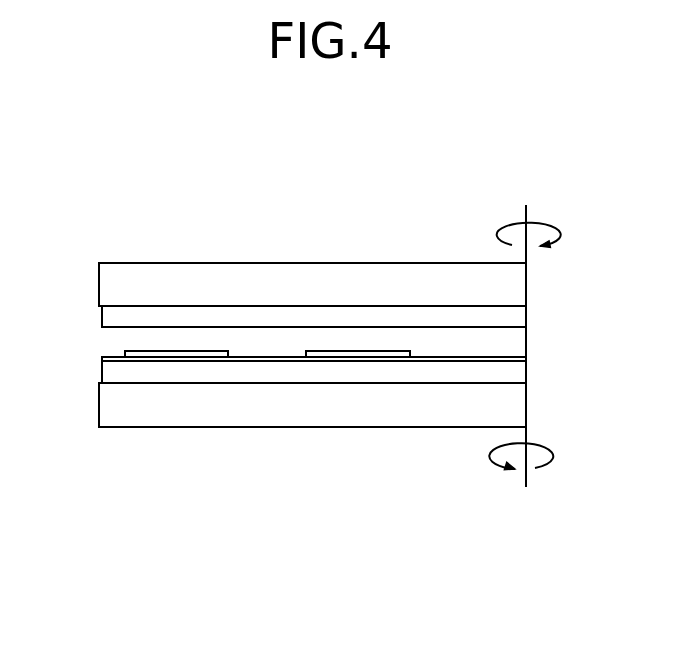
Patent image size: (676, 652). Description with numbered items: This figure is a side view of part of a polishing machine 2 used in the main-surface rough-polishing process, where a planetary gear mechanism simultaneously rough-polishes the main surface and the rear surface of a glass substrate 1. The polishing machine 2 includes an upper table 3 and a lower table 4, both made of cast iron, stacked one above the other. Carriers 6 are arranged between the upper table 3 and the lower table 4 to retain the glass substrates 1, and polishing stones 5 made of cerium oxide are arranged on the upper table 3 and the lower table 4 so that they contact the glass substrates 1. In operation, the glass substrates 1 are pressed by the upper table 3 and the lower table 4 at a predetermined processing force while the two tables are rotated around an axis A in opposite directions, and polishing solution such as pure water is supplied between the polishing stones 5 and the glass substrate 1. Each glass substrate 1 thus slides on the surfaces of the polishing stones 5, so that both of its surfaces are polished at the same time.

The glass substrate 1 is at (150, 351).
The polishing machine 2 is at (334, 185).
The upper table 3 is at (112, 285).
The lower table 4 is at (112, 403).
The polishing stone 5 is at (112, 317).
The carrier 6 is at (103, 357).
The axis A is at (527, 207).